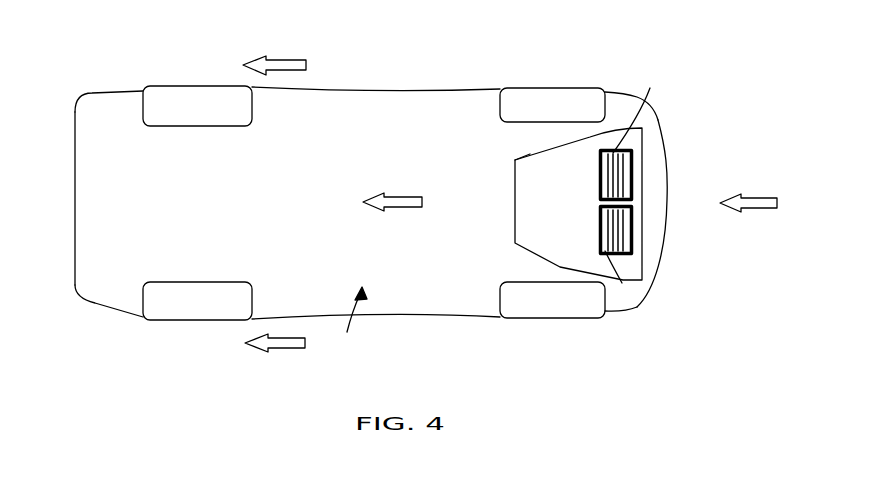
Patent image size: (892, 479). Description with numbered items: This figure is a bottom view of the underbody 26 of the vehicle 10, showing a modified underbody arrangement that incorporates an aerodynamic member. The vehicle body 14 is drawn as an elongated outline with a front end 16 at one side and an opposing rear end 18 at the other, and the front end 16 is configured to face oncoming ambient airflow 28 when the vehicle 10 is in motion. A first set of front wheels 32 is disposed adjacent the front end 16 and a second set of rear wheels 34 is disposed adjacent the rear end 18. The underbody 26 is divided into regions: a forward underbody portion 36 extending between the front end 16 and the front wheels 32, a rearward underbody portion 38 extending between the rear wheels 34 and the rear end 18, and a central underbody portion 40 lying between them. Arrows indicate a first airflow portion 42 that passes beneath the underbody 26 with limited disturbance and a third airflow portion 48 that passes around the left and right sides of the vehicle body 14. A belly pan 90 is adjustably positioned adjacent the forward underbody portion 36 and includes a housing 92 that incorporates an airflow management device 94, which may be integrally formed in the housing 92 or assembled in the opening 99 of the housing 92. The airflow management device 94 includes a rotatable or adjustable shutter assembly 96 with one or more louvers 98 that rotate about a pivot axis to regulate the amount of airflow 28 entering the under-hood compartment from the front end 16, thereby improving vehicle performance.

The vehicle 10 is at (369, 206).
The vehicle body 14 is at (415, 313).
The front end 16 is at (662, 202).
The rear end 18 is at (74, 205).
The underbody 26 is at (351, 323).
The ambient airflow 28 is at (748, 197).
The front wheels 32 is at (552, 93).
The rear wheels 34 is at (198, 91).
The forward underbody portion 36 is at (634, 109).
The rearward underbody portion 38 is at (111, 117).
The central underbody portion 40 is at (366, 99).
The first airflow portion 42 is at (392, 200).
The third airflow portion 48 is at (274, 63).
The belly pan 90 is at (527, 222).
The housing 92 is at (525, 157).
The airflow management device 94 is at (636, 242).
The shutter assembly 96 is at (619, 280).
The louvers 98 is at (622, 173).
The opening 99 is at (637, 110).